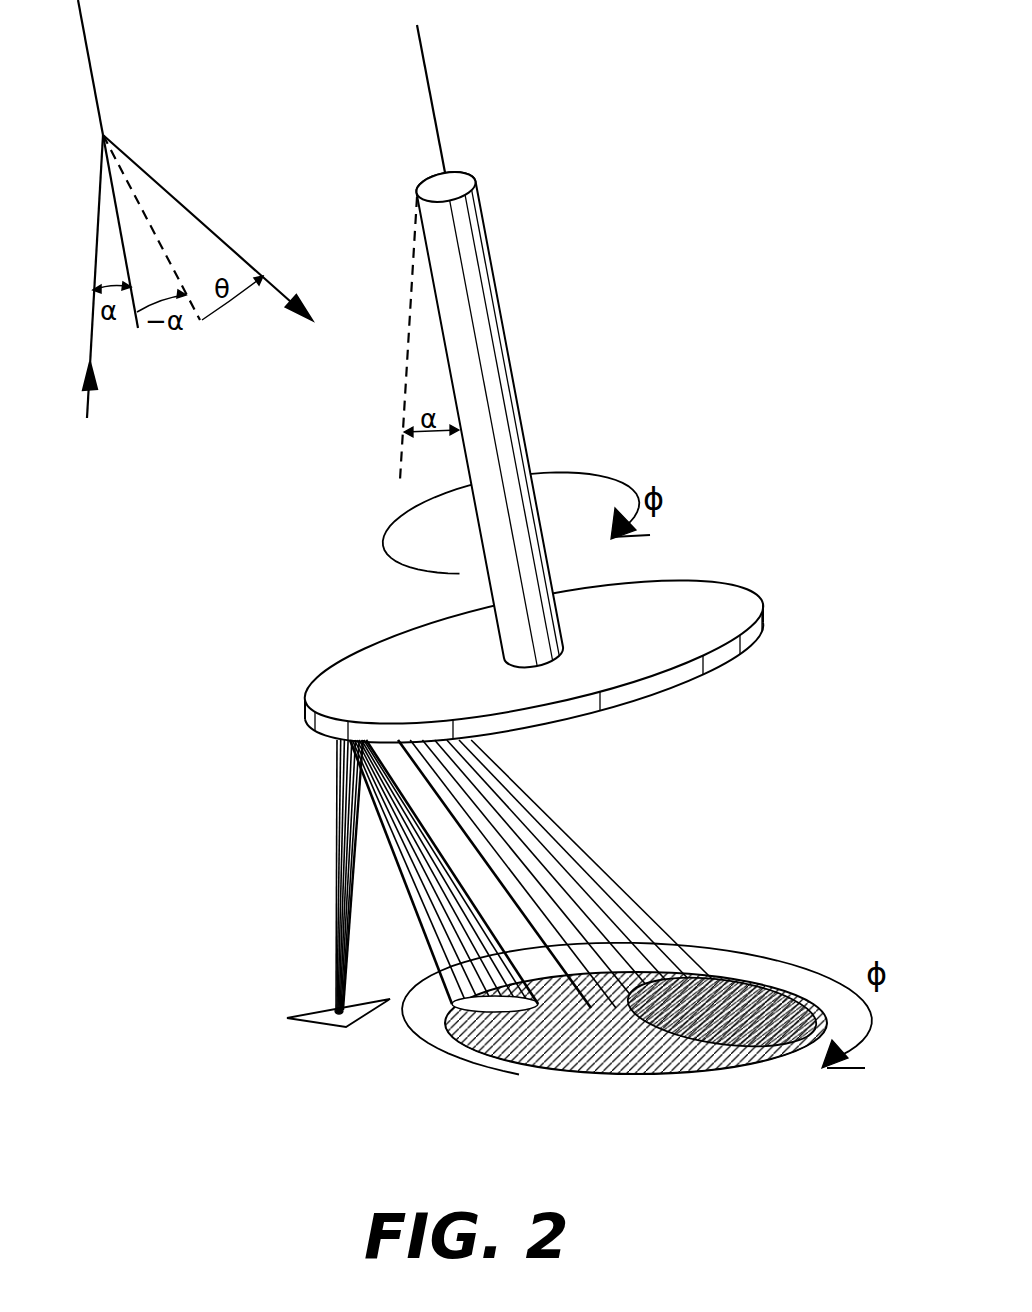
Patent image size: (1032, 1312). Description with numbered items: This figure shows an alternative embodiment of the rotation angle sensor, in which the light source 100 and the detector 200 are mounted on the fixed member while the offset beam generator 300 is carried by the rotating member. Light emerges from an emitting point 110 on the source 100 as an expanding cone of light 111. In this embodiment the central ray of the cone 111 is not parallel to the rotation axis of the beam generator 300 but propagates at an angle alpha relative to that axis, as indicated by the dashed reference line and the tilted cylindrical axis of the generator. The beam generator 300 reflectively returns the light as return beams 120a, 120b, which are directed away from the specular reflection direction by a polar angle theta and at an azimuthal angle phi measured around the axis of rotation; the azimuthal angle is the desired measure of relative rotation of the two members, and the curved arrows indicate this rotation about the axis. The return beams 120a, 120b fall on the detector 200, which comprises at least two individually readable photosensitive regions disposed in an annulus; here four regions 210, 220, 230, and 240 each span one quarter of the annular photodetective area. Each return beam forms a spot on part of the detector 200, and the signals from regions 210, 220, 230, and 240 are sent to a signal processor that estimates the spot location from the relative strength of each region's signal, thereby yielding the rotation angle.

The light source 100 is at (318, 1007).
The emitting point 110 is at (338, 1015).
The expanding cone of light 111 is at (335, 808).
The return beam 120a is at (428, 832).
The second incident beam 120b is at (572, 858).
The detector 200 is at (703, 1073).
The photosensitive region 210 is at (500, 1052).
The photosensitive region 220 is at (623, 1060).
The photosensitive region 230 is at (788, 1007).
The photosensitive region 240 is at (531, 955).
The offset beam generator 300 is at (714, 610).